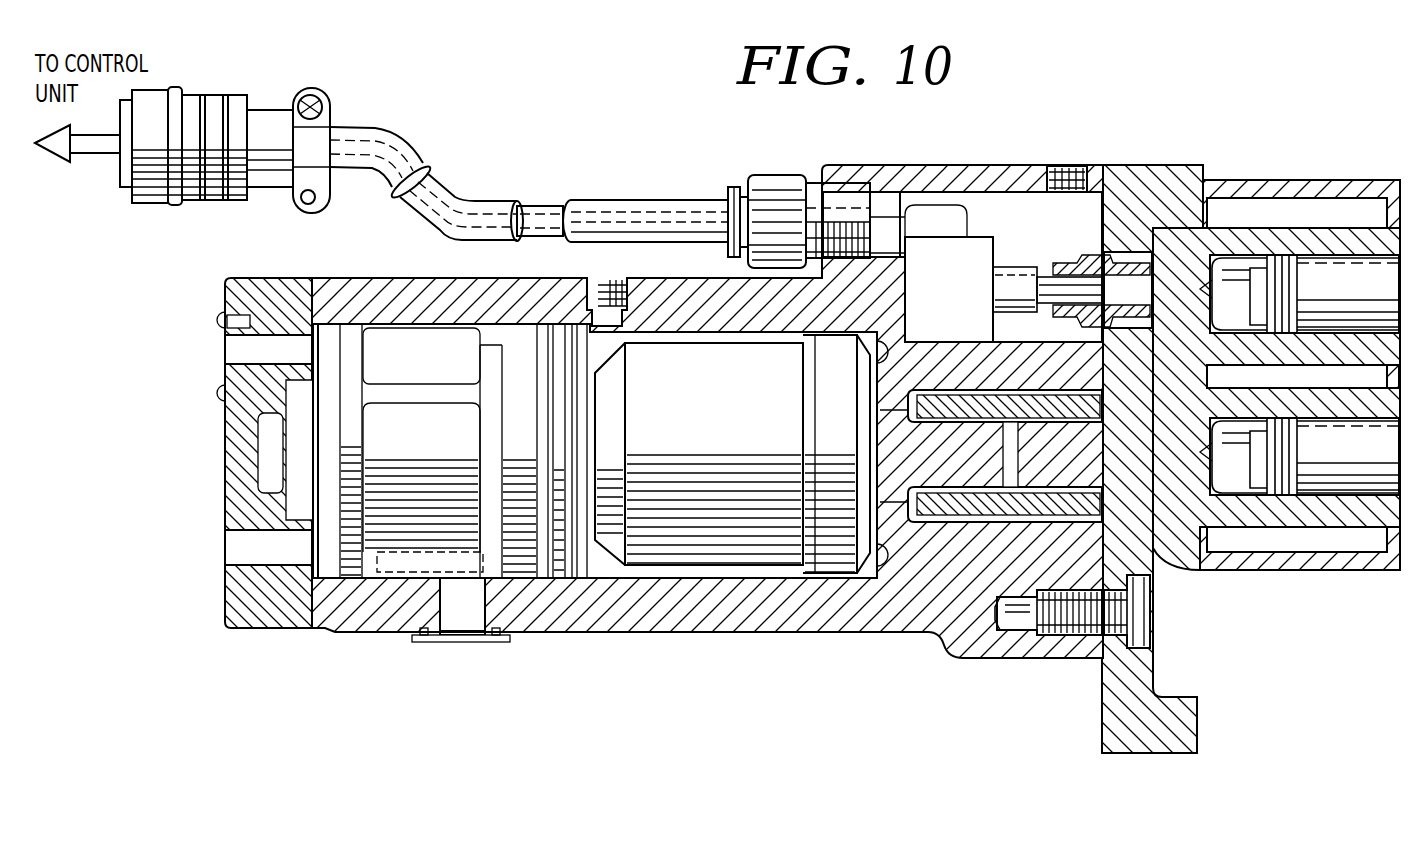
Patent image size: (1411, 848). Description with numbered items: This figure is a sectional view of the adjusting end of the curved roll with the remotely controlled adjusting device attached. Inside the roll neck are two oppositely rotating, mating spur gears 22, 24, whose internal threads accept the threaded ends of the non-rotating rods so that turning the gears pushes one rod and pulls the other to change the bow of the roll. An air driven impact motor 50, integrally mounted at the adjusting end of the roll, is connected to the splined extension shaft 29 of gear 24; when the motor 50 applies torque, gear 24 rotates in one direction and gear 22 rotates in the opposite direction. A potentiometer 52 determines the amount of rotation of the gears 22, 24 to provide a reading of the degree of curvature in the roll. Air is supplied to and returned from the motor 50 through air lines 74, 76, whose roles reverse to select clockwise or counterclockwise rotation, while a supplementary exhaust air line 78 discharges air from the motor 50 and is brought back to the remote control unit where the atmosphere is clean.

The spur gear 22 is at (1207, 223).
The spur gear 24 is at (1252, 540).
The splined extension shaft 29 is at (1033, 494).
The air driven impact motor 50 is at (715, 568).
The potentiometer 52 is at (945, 224).
The air line 74 is at (225, 352).
The air line 76 is at (225, 563).
The air line 78 is at (465, 620).